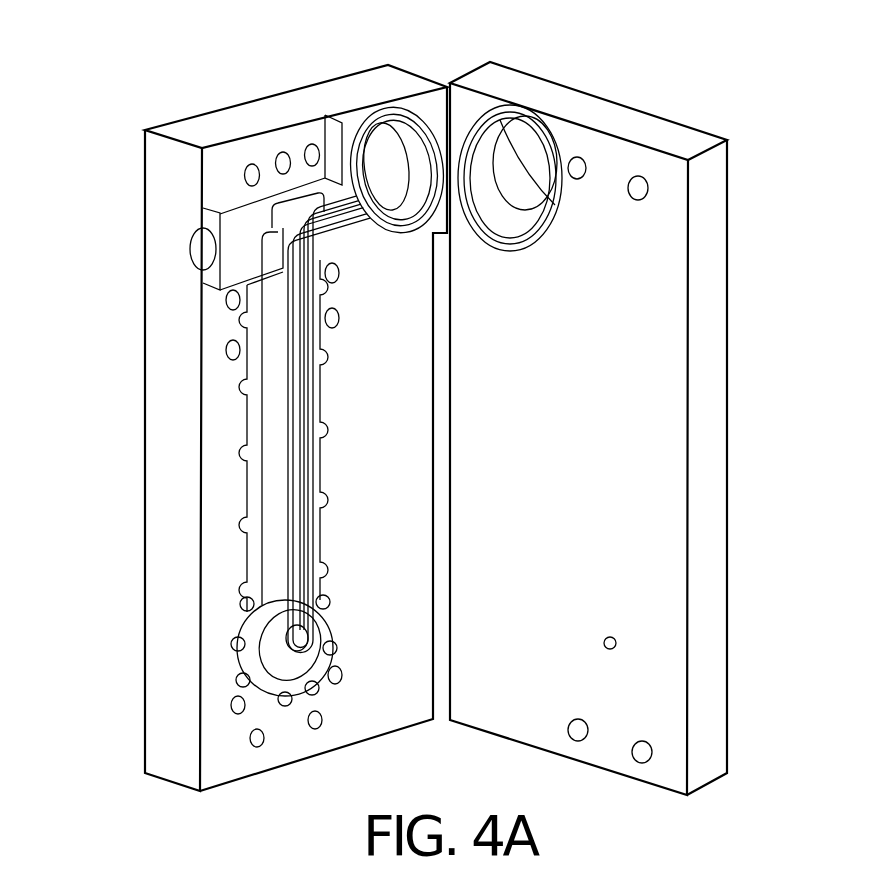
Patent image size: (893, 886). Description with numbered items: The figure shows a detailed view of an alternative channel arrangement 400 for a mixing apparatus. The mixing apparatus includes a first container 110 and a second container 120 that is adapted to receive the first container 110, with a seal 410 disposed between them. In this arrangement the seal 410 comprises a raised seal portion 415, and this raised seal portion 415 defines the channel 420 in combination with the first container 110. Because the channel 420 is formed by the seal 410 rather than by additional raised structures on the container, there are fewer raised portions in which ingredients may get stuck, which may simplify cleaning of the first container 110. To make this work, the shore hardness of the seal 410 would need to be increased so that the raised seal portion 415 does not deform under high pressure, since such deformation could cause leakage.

The channel arrangement 400 is at (104, 76).
The first container 110 is at (712, 448).
The second container 120 is at (218, 185).
The raised seal portion 415 is at (278, 468).
The channel 420 is at (306, 540).
The seal 410 is at (243, 640).